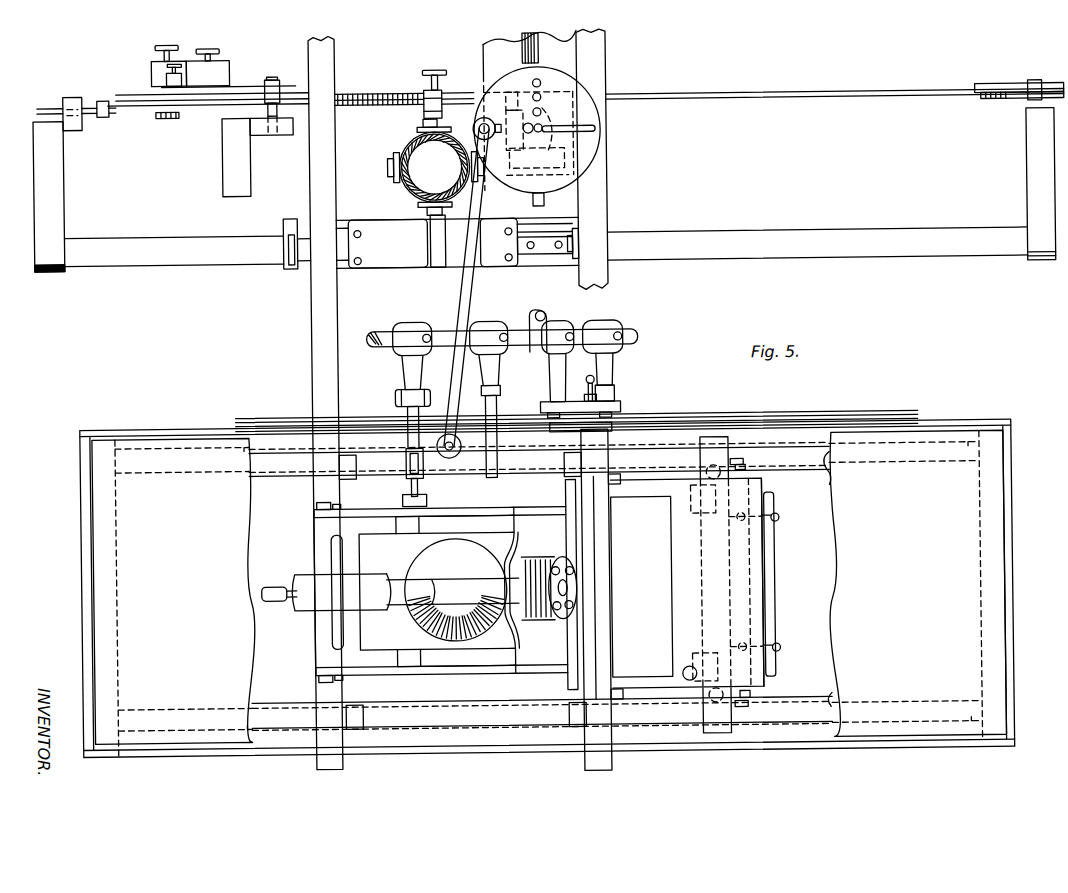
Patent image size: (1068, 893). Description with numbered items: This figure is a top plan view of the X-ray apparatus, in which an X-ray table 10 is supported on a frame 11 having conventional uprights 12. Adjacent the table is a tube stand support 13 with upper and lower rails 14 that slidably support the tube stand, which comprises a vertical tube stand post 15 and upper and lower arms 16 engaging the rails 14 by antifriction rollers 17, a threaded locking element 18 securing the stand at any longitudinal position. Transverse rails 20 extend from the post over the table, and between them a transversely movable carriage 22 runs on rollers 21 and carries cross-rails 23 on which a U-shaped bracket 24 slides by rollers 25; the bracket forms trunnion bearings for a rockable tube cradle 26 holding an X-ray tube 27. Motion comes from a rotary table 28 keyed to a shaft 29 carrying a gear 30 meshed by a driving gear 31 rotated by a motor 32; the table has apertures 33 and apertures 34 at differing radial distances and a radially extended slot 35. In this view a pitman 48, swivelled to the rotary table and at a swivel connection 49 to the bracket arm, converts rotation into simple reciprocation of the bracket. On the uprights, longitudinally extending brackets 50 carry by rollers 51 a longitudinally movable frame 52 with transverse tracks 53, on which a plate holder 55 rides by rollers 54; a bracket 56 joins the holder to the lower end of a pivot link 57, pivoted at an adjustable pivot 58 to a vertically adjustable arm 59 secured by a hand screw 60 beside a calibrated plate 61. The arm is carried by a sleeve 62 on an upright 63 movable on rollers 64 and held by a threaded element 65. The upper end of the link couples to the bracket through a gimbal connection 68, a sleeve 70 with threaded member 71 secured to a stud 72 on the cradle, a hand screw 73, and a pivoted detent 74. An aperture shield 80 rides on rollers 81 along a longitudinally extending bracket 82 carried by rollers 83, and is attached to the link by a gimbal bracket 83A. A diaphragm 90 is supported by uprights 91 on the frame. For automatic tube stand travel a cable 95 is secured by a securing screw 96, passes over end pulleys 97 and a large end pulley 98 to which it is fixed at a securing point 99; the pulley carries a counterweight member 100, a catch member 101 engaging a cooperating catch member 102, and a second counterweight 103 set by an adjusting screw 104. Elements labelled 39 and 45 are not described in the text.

The X-ray table 10 is at (120, 525).
The frame 11 is at (128, 410).
The uprights 12 is at (80, 453).
The tube stand support 13 is at (40, 201).
The rails 14 is at (127, 238).
The tube stand post 15 is at (405, 152).
The arms 16 is at (393, 232).
The antifriction rollers 17 is at (564, 256).
The threaded locking element 18 is at (288, 262).
The transverse rails 20 is at (313, 358).
The rollers 21 is at (338, 463).
The transversely movable carriage 22 is at (345, 459).
The cross-rails 23 is at (318, 500).
The U-shaped bracket 24 is at (314, 510).
The rollers 25 is at (326, 503).
The tube cradle 26 is at (421, 553).
The X-ray tube 27 is at (390, 576).
The rotary table 28 is at (600, 132).
The shaft 29 is at (539, 140).
The gear 30 is at (546, 116).
The driving gear 31 is at (512, 124).
The motor 32 is at (490, 44).
The apertures 33 is at (518, 145).
The apertures 34 is at (536, 83).
The radially extended slot 35 is at (568, 117).
The pivot 39 is at (477, 128).
The lug 45 is at (536, 201).
The pitman 48 is at (470, 296).
The swivel connection 49 is at (462, 445).
The longitudinally extending brackets 50 is at (829, 468).
The rollers 51 is at (745, 463).
The longitudinally movable frame 52 is at (748, 470).
The transverse tracks 53 is at (720, 735).
The rollers 54 is at (735, 519).
The plate holder 55 is at (756, 566).
The bracket 56 is at (625, 363).
The pivot link 57 is at (639, 334).
The pivot 58 is at (546, 324).
The vertically adjustable arm 59 is at (553, 368).
The hand screw 60 is at (588, 380).
The calibrated plate 61 is at (620, 425).
The sleeve 62 is at (618, 405).
The upright 63 is at (612, 390).
The rollers 64 is at (576, 426).
The threaded element 65 is at (589, 398).
The gimbal connection 68 is at (427, 322).
The sleeve 70 is at (406, 420).
The threaded member 71 is at (406, 462).
The stud 72 is at (418, 483).
The hand screw 73 is at (401, 498).
The pivoted detent 74 is at (397, 396).
The aperture shield 80 is at (530, 503).
The rollers 81 is at (527, 512).
The longitudinally extending bracket 82 is at (611, 512).
The rollers 83 is at (611, 480).
The gimbal bracket 83A is at (498, 415).
The diaphragm 90 is at (776, 590).
The uprights 91 is at (776, 517).
The cable 95 is at (854, 94).
The securing screw 96 is at (436, 70).
The end pulleys 97 is at (998, 89).
The large end pulley 98 is at (387, 91).
The cable securing point 99 is at (293, 74).
The counterweight member 100 is at (158, 60).
The catch member 101 is at (102, 118).
The cooperating catch member 102 is at (117, 115).
The second counterweight 103 is at (233, 68).
The adjusting screw 104 is at (170, 78).